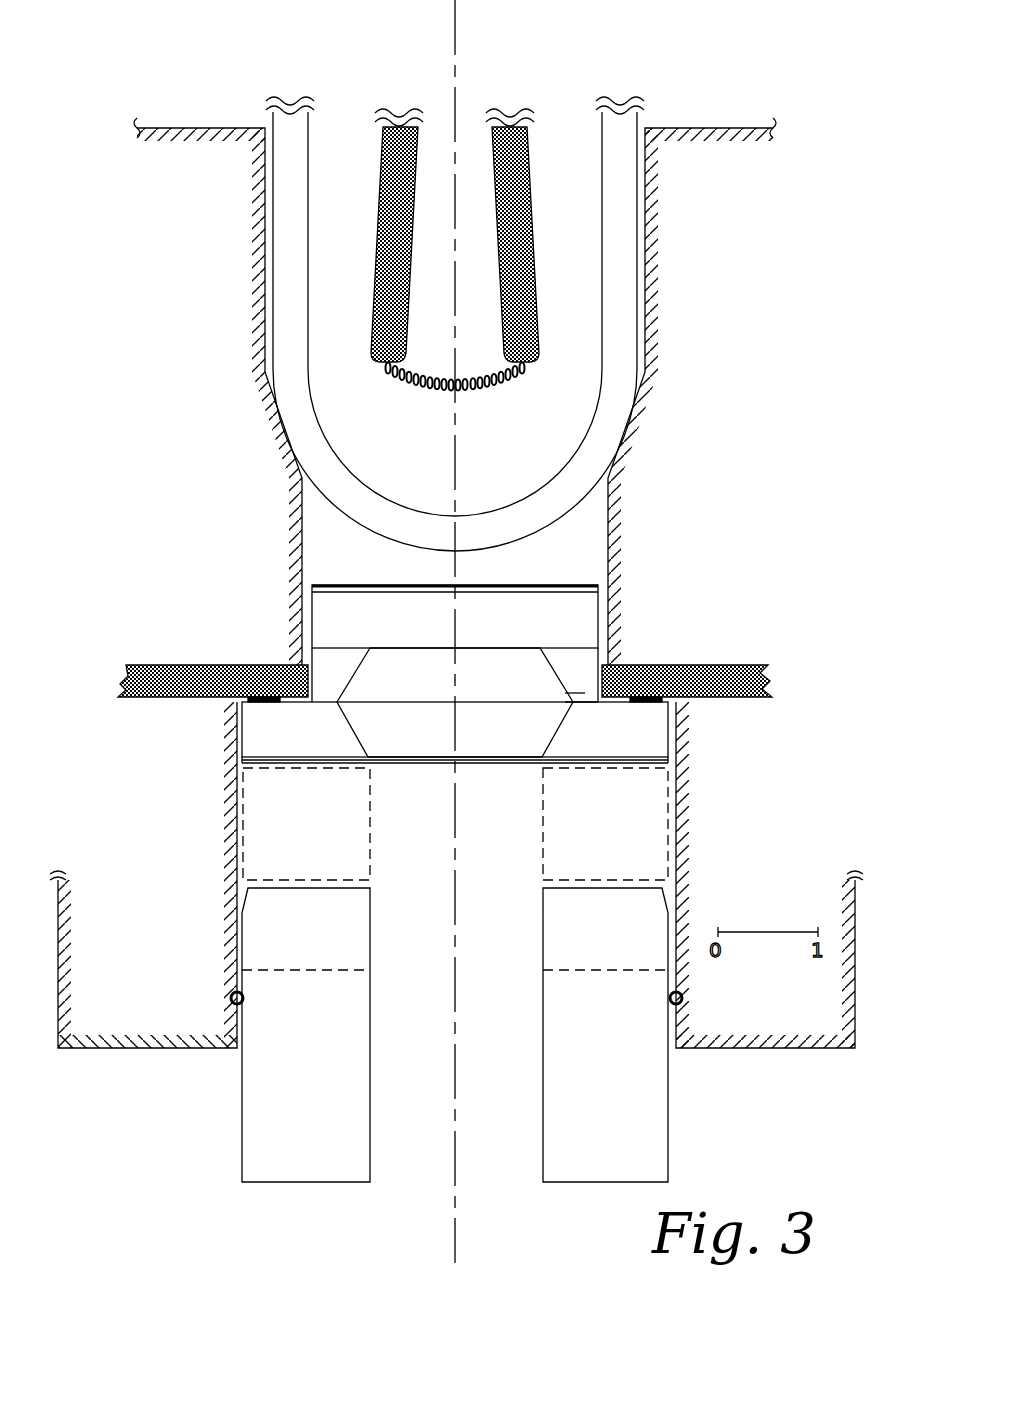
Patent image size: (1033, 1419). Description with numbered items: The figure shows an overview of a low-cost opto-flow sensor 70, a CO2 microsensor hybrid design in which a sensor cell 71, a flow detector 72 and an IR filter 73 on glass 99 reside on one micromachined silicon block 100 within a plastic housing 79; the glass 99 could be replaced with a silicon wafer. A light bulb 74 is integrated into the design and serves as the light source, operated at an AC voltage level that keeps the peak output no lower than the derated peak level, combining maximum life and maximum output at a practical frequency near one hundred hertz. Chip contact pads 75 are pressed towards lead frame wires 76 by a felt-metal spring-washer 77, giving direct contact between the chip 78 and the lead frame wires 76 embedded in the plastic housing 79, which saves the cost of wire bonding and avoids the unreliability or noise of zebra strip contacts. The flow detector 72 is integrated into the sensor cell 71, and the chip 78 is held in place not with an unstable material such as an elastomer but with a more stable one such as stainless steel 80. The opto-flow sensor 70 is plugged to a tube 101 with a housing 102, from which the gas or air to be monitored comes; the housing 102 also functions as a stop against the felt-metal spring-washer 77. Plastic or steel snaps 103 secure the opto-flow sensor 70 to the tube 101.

The opto-flow sensor 70 is at (806, 186).
The sensor cell 71 is at (414, 686).
The flow detector 72 is at (588, 710).
The IR filter 73 is at (612, 576).
The light bulb 74 is at (623, 253).
The chip contact pads 75 is at (650, 705).
The lead frame wires 76 is at (737, 666).
The felt-metal spring-washer 77 is at (647, 830).
The chip 78 is at (232, 666).
The plastic housing 79 is at (773, 496).
The stainless steel 80 is at (642, 762).
The glass 99 is at (600, 620).
The micromachined silicon block 100 is at (303, 747).
The tube 101 is at (520, 1157).
The housing 102 is at (320, 1122).
The snaps 103 is at (245, 999).